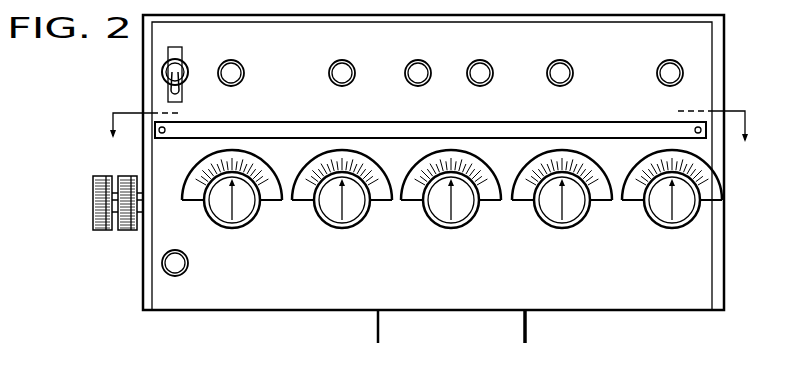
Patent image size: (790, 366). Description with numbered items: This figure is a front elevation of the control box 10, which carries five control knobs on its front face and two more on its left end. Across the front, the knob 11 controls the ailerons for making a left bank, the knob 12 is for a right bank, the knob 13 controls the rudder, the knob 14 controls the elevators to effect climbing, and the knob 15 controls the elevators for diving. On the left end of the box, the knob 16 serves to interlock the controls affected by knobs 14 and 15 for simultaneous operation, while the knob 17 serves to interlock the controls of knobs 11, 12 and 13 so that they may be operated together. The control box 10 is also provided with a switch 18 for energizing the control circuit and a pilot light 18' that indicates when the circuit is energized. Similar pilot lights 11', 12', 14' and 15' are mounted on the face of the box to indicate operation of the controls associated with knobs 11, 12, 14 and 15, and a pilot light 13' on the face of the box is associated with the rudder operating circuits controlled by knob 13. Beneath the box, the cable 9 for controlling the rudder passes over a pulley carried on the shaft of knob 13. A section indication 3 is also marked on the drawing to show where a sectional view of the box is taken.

The section line 3 is at (427, 140).
The cable 9 is at (383, 330).
The control box 10 is at (310, 302).
The knob 11 is at (232, 206).
The pilot light 11' is at (241, 64).
The knob 12 is at (342, 207).
The pilot light 12' is at (326, 64).
The knob 13 is at (451, 153).
The pilot light 13' is at (415, 63).
The knob 14 is at (562, 207).
The pilot light 14' is at (559, 63).
The knob 15 is at (672, 206).
The pilot light 15' is at (666, 60).
The knob 16 is at (97, 229).
The knob 17 is at (133, 231).
The switch 18 is at (187, 68).
The pilot light 18' is at (191, 270).